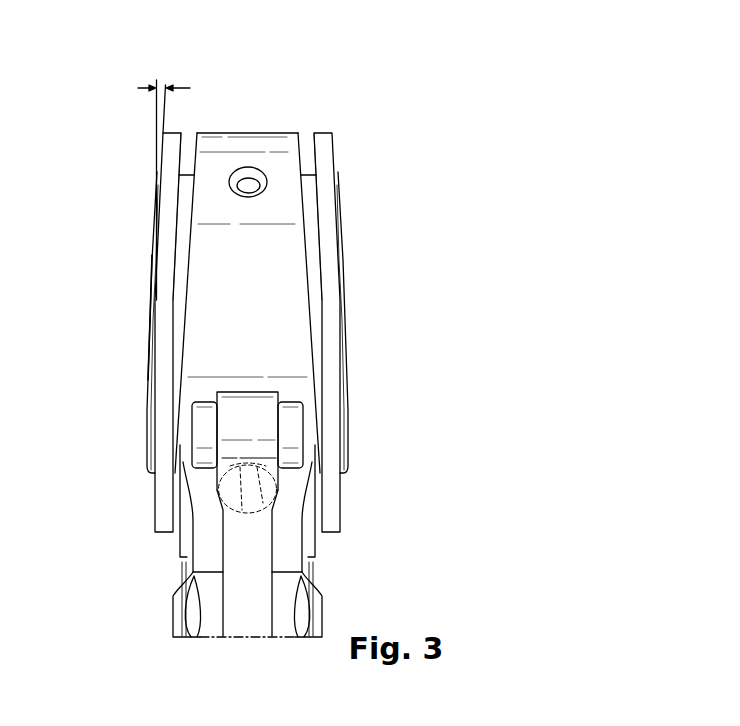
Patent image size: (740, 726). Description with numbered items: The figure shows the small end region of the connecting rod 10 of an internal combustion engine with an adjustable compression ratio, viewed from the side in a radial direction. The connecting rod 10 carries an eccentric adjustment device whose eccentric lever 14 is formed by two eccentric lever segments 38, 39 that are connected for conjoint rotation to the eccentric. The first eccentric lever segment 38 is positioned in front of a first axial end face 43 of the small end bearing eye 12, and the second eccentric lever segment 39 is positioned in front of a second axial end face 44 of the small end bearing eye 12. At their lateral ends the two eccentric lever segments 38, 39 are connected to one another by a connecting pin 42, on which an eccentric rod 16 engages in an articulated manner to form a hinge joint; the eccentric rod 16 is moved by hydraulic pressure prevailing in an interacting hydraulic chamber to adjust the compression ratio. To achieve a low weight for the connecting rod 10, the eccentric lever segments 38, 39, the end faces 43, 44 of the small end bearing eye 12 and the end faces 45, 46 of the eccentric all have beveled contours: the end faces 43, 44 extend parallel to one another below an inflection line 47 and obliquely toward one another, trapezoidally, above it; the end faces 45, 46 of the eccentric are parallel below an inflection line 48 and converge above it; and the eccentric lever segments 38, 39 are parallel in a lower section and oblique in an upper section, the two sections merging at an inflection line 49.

The connecting rod 10 is at (245, 329).
The small end bearing eye 12 is at (280, 313).
The eccentric lever 14 is at (245, 332).
The eccentric rod 16 is at (257, 555).
The first eccentric lever segment 38 is at (162, 392).
The second eccentric lever segment 39 is at (335, 352).
The connecting pin 42 is at (299, 441).
The first axial end face 43 is at (190, 206).
The second axial end face 44 is at (320, 203).
The end face of the eccentric 45 is at (113, 322).
The end face of the eccentric 46 is at (342, 244).
The inflection line 47 is at (330, 419).
The inflection line 48 is at (141, 315).
The inflection line 49 is at (145, 299).